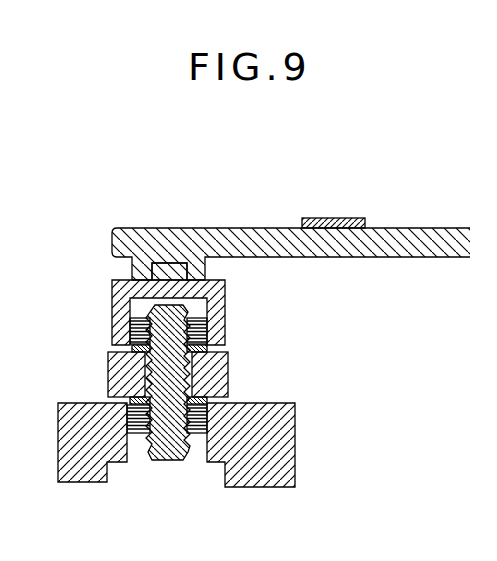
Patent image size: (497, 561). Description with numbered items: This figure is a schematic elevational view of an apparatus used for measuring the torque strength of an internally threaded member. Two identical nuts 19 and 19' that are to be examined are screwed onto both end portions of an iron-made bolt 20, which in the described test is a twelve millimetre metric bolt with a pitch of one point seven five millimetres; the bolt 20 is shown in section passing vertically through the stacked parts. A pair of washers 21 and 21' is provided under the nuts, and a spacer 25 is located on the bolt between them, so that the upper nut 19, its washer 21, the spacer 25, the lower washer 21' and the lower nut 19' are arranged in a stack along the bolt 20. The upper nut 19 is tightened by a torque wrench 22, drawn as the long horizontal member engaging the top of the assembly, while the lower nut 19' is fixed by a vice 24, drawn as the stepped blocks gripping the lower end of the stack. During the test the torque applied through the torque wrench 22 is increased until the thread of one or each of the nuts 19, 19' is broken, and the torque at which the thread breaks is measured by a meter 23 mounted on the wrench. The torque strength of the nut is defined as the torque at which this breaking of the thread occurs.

The torque wrench 22 is at (212, 228).
The meter 23 is at (341, 218).
The nut 19 is at (136, 312).
The nut 19' is at (167, 480).
The bolt 20 is at (170, 460).
The washer 21 is at (224, 337).
The washer 21' is at (225, 390).
The vice 24 is at (90, 478).
The spacer 25 is at (108, 375).